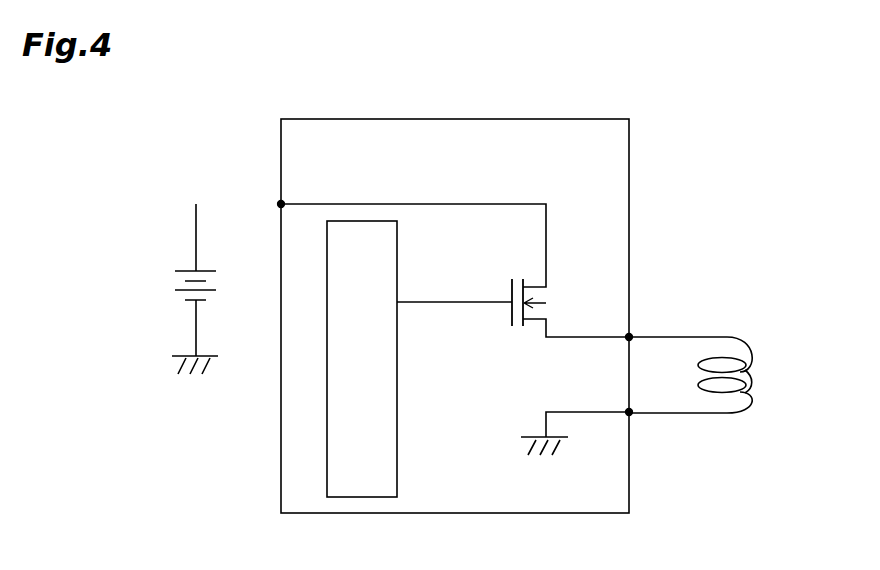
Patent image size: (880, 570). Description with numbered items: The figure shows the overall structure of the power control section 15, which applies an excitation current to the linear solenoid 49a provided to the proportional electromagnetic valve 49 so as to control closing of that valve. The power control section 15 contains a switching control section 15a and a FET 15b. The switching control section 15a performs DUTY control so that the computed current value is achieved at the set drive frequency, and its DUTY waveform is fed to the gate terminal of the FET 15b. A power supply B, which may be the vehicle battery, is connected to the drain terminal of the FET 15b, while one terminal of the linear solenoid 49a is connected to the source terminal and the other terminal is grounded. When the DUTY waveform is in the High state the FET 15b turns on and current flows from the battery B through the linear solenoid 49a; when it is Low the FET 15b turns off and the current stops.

The power control section 15 is at (629, 175).
The switching control section 15a is at (397, 437).
The FET 15b is at (503, 318).
The power supply B is at (170, 289).
The linear solenoid 49a is at (737, 335).
The proportional electromagnetic valve 49 is at (736, 329).